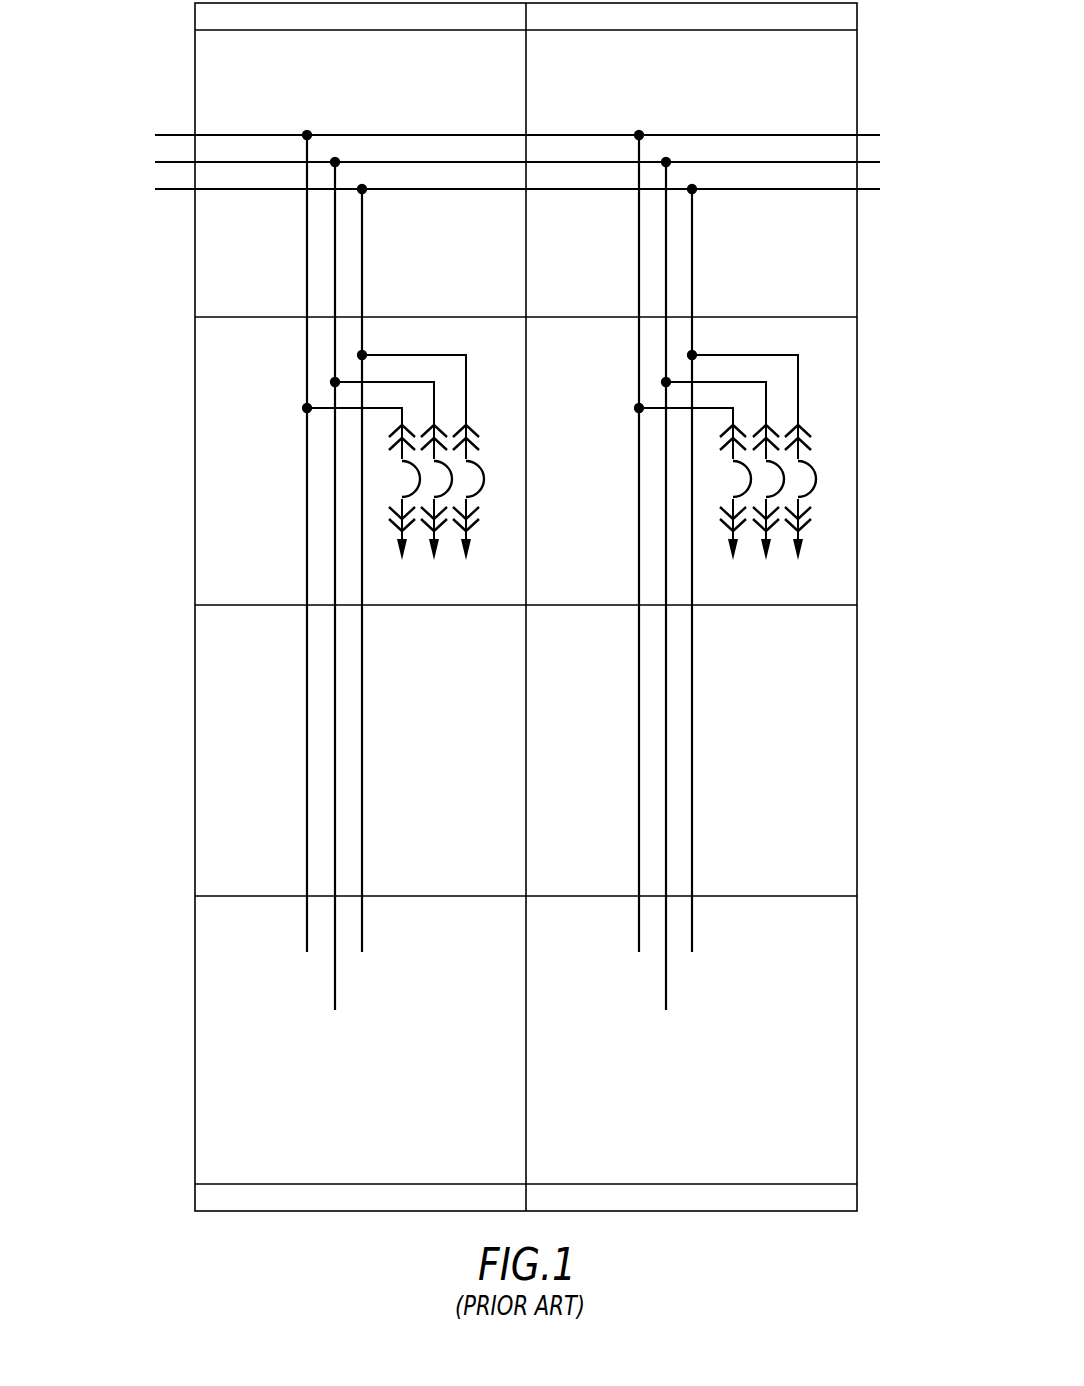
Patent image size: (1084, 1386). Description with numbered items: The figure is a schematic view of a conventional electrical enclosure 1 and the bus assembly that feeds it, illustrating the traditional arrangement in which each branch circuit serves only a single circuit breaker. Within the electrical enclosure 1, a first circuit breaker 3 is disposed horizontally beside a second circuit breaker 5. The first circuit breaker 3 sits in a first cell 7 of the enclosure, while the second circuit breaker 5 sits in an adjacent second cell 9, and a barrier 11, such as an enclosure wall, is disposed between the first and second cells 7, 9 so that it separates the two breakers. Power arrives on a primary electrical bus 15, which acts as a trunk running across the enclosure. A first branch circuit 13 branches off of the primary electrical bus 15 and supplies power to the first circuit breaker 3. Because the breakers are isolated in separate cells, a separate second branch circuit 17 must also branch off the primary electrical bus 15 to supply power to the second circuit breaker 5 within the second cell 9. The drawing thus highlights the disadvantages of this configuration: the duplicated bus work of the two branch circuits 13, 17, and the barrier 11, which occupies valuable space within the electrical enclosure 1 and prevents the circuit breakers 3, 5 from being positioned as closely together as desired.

The electrical enclosure 1 is at (870, 965).
The first circuit breaker 3 is at (516, 496).
The second circuit breaker 5 is at (839, 498).
The first cell 7 is at (227, 605).
The second cell 9 is at (552, 605).
The barrier 11 is at (527, 403).
The first branch circuit 13 is at (298, 293).
The primary electrical bus 15 is at (563, 122).
The second branch circuit 17 is at (629, 293).